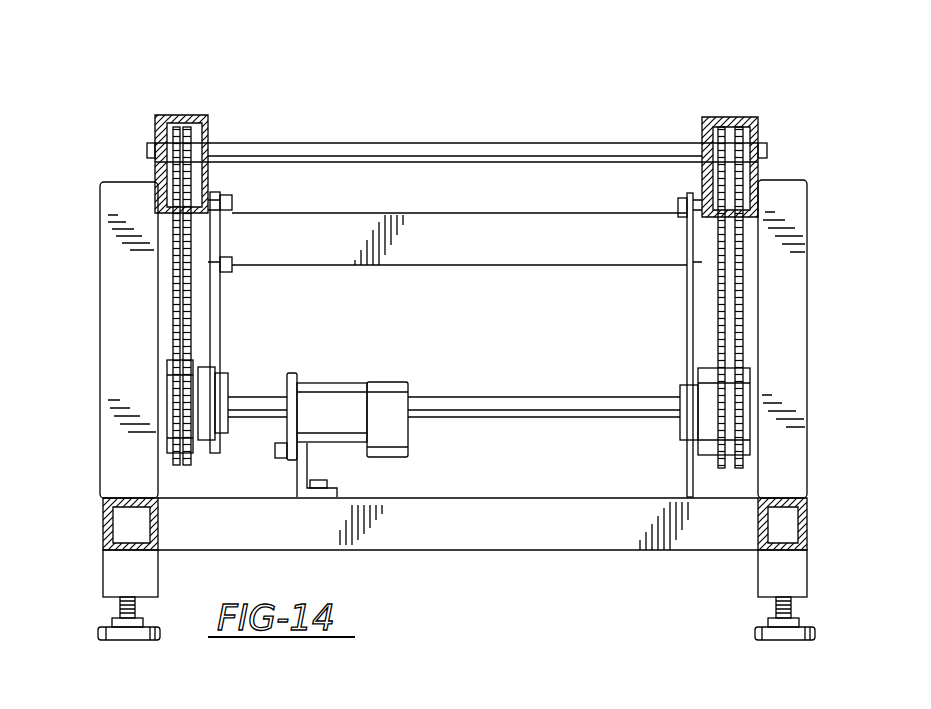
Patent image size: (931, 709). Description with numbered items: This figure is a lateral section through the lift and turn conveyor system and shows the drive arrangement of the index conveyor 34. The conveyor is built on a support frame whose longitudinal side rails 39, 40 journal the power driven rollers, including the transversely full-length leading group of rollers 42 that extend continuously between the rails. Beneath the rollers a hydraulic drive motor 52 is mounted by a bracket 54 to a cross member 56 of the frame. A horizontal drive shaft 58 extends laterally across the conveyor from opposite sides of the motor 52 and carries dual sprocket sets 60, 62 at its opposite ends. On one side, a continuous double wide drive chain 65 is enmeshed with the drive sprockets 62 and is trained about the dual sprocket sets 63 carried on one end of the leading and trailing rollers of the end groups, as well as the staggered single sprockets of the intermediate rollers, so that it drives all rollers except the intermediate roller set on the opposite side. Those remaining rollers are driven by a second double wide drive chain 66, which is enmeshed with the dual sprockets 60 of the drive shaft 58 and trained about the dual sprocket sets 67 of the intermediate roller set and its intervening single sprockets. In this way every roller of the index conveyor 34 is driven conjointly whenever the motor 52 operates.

The index conveyor 34 is at (601, 132).
The longitudinal side rail 39 is at (163, 115).
The longitudinal side rail 40 is at (740, 117).
The leading group of rollers 42 is at (437, 141).
The hydraulic drive motor 52 is at (346, 383).
The bracket 54 is at (337, 497).
The cross member 56 is at (513, 510).
The horizontal drive shaft 58 is at (541, 400).
The dual sprocket set 60 is at (197, 457).
The dual sprocket set 62 is at (715, 462).
The dual sprocket set 63 is at (761, 143).
The double wide drive chain 65 is at (745, 322).
The second double wide drive chain 66 is at (167, 313).
The dual sprocket set 67 is at (152, 141).